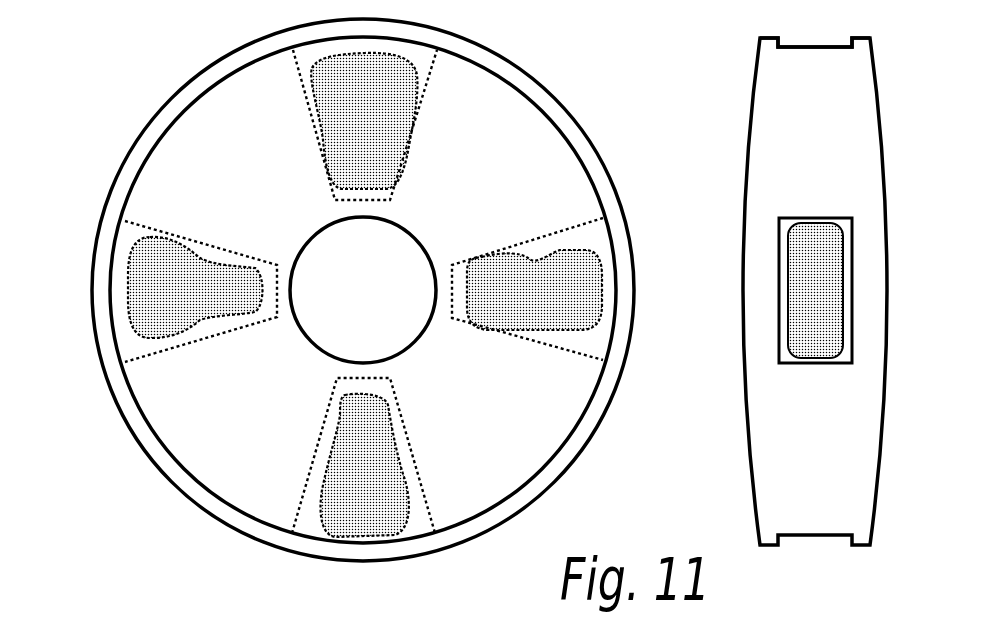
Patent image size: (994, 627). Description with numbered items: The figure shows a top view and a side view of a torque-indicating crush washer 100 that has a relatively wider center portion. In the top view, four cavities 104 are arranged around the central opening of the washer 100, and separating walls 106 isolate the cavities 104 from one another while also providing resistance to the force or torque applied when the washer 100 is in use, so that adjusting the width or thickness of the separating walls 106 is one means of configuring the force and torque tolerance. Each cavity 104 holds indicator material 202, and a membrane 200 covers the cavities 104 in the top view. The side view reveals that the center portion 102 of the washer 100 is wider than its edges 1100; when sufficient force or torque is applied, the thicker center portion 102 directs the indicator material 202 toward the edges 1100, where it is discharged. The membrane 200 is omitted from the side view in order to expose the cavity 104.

The torque-indicating crush washer 100 is at (743, 241).
The center portion 102 is at (744, 276).
The cavities 104 is at (302, 97).
The separating walls 106 is at (496, 412).
The membrane 200 is at (163, 480).
The indicator material 202 is at (365, 295).
The edges 1100 is at (872, 58).